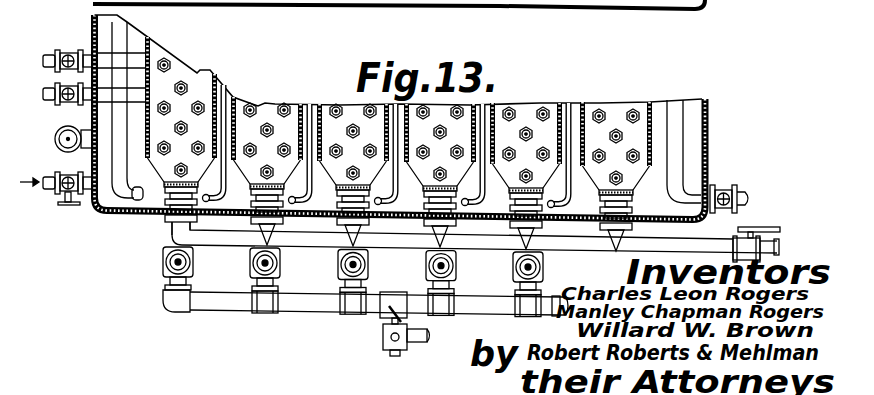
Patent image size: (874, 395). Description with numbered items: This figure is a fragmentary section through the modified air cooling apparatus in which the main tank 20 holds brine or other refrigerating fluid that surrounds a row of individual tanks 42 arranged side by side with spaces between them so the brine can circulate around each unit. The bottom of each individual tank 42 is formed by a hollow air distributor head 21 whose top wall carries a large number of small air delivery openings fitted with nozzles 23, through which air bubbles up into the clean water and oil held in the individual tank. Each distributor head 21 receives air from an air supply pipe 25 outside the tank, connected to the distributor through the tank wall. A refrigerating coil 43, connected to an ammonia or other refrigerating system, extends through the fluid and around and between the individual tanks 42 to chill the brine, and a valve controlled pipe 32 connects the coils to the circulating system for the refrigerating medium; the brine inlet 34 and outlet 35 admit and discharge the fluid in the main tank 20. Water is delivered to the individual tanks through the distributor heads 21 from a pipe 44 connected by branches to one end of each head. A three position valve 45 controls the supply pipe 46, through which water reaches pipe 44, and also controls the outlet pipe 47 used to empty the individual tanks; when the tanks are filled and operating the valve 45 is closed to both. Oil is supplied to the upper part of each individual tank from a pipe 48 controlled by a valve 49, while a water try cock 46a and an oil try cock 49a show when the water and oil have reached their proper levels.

The tank 20 is at (707, 105).
The distributor head 21 is at (405, 137).
The nozzle 23 is at (166, 100).
The pipe 25 is at (250, 265).
The valve controlled pipe 32 is at (778, 199).
The inlet 34 is at (48, 192).
The outlet 35 is at (727, 0).
The individual tank 42 is at (324, 104).
The refrigerating coil 43 is at (126, 190).
The pipe 44 is at (303, 304).
The three position valve 45 is at (382, 335).
The supply pipe 46 is at (441, 335).
The water try cock 46a is at (70, 46).
The outlet pipe 47 is at (395, 377).
The pipe 48 is at (313, 244).
The valve 49 is at (750, 246).
The oil try cock 49a is at (50, 104).